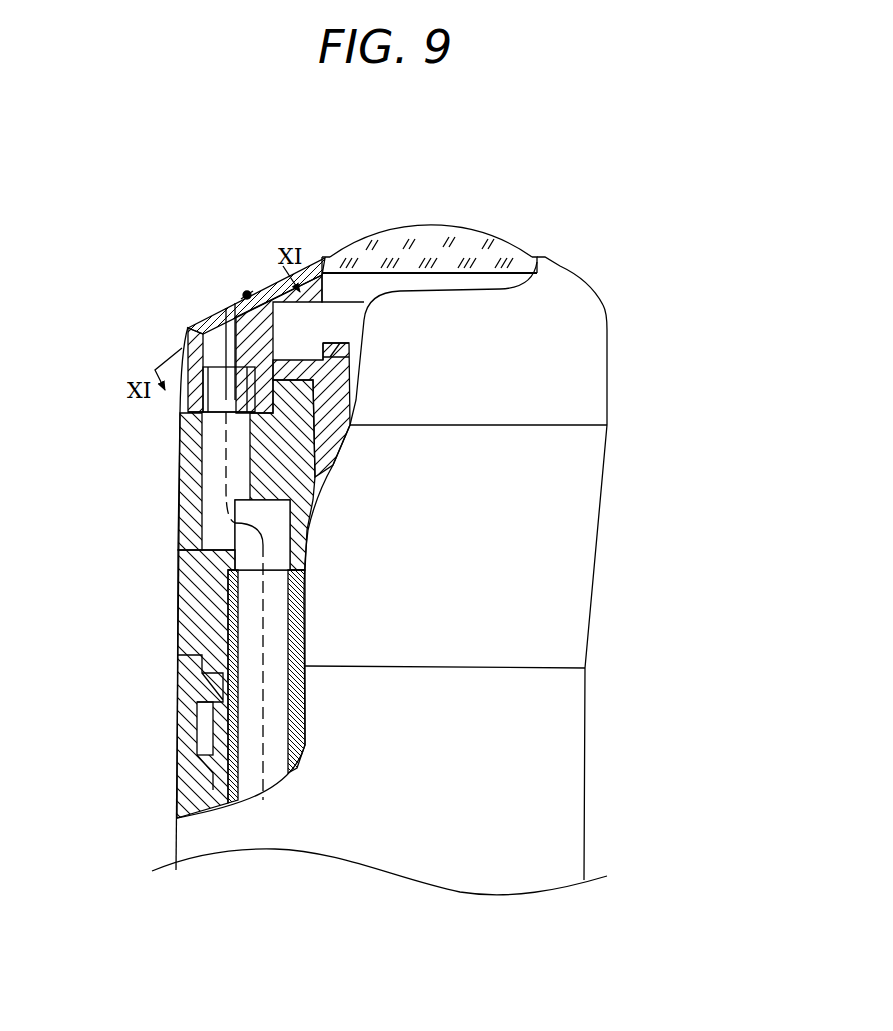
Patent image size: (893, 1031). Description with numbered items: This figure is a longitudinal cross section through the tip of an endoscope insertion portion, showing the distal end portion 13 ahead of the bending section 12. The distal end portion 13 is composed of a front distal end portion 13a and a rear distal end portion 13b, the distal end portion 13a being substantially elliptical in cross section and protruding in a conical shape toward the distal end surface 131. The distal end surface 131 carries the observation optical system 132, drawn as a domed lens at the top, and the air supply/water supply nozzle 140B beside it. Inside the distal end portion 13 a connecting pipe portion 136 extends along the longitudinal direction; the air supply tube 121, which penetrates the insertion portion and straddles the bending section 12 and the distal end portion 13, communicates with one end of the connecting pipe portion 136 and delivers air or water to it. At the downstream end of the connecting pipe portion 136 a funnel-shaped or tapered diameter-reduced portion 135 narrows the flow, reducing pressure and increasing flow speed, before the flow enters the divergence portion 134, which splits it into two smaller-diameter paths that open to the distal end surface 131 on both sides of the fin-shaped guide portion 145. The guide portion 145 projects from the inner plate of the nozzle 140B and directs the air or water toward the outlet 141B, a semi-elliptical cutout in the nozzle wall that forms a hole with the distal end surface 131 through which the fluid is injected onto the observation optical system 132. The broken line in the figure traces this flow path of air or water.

The bending section 12 is at (140, 720).
The air supply tube 121 is at (193, 608).
The distal end portion 13 is at (703, 373).
The distal end portion 13a is at (586, 398).
The distal end portion 13b is at (586, 458).
The distal end surface 131 is at (567, 272).
The observation optical system 132 is at (433, 238).
The divergence portion 134 is at (187, 335).
The diameter-reduced portion 135 is at (190, 437).
The connecting pipe portion 136 is at (202, 522).
The air supply/water supply nozzle 140B is at (200, 301).
The outlet 141B is at (246, 296).
The guide portion 145 is at (241, 296).